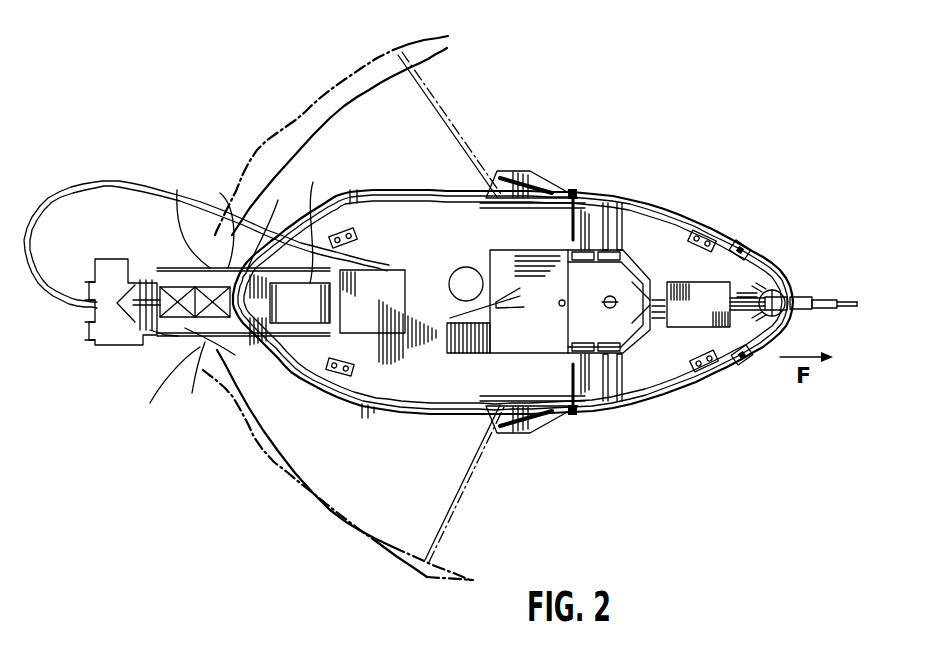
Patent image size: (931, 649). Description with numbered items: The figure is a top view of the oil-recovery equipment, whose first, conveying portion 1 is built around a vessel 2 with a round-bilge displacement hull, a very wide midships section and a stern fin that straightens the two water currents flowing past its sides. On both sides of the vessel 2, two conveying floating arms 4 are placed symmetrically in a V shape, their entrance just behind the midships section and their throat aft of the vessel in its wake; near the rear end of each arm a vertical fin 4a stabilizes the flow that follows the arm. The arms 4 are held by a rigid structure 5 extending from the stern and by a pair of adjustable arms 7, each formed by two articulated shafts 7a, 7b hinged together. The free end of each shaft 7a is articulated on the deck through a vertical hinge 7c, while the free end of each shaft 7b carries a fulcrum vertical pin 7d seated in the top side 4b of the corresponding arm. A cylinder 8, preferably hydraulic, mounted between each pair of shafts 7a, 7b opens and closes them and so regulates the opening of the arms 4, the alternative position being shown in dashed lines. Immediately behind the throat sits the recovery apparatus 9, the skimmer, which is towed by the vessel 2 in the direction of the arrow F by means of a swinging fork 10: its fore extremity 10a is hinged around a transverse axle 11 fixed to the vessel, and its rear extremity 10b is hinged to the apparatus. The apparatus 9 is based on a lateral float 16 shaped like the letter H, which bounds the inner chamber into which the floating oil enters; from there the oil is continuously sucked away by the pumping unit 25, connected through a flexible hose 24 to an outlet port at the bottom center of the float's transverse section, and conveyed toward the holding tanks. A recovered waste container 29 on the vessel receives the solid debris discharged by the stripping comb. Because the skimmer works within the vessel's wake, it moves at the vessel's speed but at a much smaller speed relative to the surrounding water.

The conveying portion 1 is at (372, 424).
The vessel 2 is at (670, 203).
The conveying floating arms 4 is at (260, 150).
The vertical fins 4a is at (170, 293).
The top sides of the arms 4b is at (522, 170).
The rigid structure 5 is at (207, 295).
The adjustable arm 7 is at (580, 190).
The articulated shaft 7a is at (560, 212).
The articulated shaft 7b is at (562, 192).
The vertical hinges 7c is at (498, 205).
The fulcrum vertical pins 7d is at (503, 178).
The cylinder 8 is at (522, 208).
The recovery apparatus 9 is at (123, 255).
The swinging fork 10 is at (175, 287).
The fore extremity of the swinging fork 10a is at (232, 362).
The rear extremity of the swinging fork 10b is at (170, 337).
The transverse axle 11 is at (243, 258).
The lateral float 16 is at (100, 335).
The flexible hose 24 is at (70, 187).
The pumping unit 25 is at (392, 270).
The recovered waste container 29 is at (302, 237).